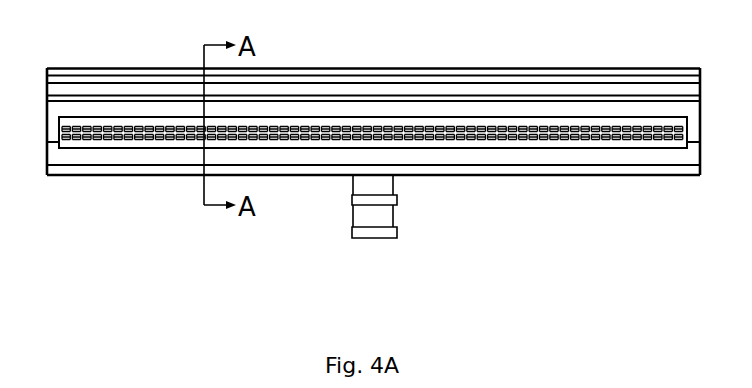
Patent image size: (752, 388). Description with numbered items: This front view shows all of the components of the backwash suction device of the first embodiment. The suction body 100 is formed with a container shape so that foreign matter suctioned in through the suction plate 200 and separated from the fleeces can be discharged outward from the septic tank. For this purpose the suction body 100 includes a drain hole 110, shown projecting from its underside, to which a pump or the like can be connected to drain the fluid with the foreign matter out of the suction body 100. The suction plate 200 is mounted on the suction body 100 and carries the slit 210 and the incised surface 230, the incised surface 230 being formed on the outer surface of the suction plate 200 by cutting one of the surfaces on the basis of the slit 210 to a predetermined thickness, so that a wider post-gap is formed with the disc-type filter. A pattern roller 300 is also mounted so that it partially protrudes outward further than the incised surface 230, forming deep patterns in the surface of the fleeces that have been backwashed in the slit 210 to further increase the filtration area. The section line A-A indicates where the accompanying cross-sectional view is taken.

The suction body 100 is at (440, 92).
The drain hole 110 is at (362, 231).
The suction plate 200 is at (597, 157).
The slit 210 is at (580, 118).
The incised surface 230 is at (495, 143).
The pattern roller 300 is at (159, 162).